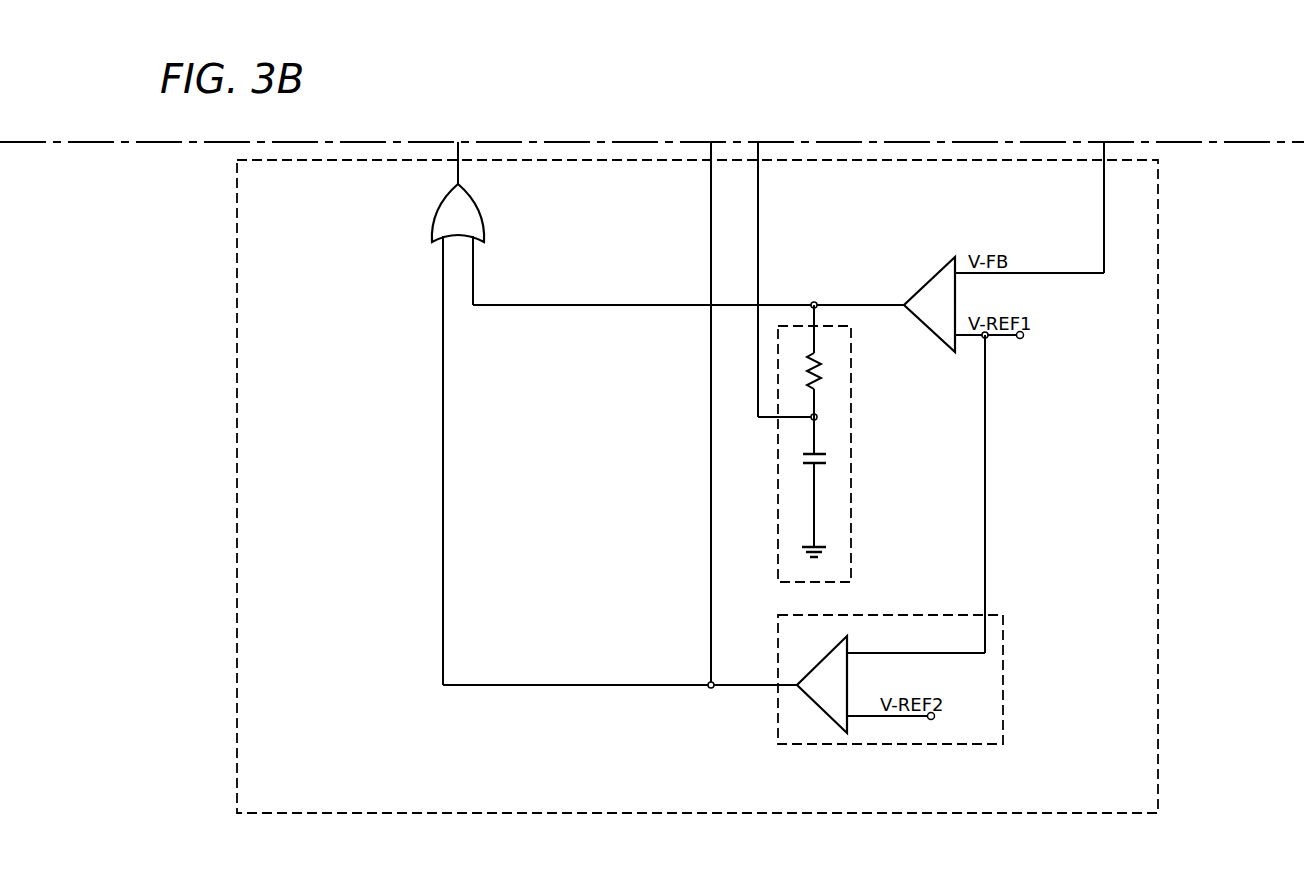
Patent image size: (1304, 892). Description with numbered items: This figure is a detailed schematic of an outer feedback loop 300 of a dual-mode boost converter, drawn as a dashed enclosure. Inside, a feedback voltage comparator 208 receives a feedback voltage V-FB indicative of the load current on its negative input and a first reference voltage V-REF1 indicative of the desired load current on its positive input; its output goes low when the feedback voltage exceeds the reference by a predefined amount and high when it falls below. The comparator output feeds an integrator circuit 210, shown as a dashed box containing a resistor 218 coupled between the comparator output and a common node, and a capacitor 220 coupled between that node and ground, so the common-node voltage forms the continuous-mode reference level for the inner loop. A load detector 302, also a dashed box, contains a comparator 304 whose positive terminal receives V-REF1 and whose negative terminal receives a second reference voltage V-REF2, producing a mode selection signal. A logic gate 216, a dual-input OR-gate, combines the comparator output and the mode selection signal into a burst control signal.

The logic gate 216 is at (450, 210).
The feedback voltage comparator 208 is at (934, 282).
The integrator circuit 210 is at (853, 416).
The resistor 218 is at (822, 372).
The capacitor 220 is at (828, 460).
The outer feedback loop 300 is at (1160, 222).
The load detector 302 is at (1005, 642).
The comparator 304 is at (822, 660).